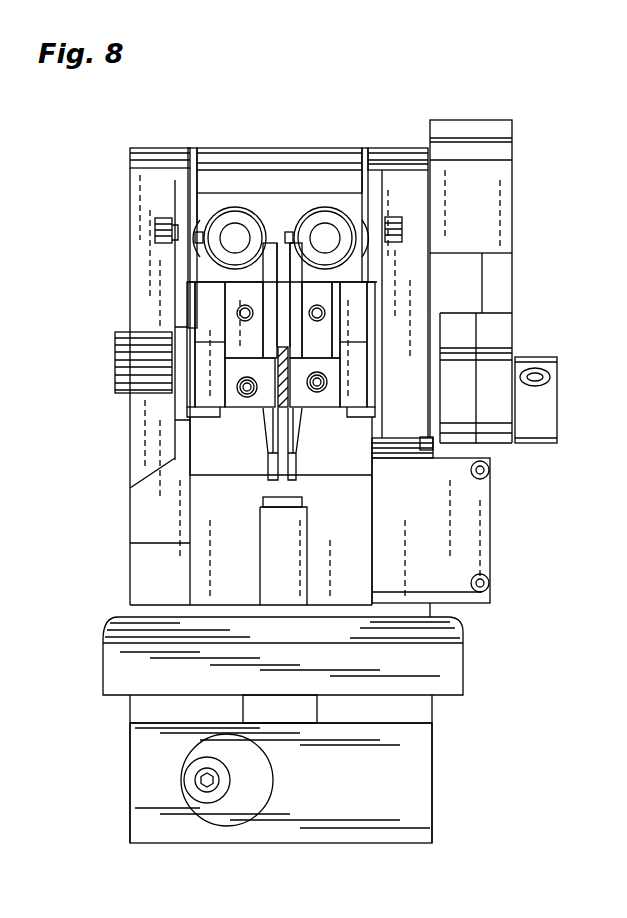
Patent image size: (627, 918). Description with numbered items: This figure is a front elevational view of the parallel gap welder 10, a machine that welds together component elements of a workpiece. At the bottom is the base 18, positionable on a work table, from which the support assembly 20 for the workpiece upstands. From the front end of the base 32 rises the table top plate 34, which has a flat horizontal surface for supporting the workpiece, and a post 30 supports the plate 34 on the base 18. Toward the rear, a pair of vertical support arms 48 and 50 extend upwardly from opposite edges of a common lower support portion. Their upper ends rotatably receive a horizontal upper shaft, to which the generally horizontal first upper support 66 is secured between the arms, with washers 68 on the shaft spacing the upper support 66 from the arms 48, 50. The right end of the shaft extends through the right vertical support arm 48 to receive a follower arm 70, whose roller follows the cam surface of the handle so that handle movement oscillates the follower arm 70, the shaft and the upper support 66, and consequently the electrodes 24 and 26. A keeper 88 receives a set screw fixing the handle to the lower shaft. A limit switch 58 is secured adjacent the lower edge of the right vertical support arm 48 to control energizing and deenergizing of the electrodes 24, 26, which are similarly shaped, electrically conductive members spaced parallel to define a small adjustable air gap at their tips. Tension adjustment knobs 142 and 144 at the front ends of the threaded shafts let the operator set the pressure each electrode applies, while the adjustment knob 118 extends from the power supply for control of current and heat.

The parallel gap welder 10 is at (238, 58).
The base 18 is at (432, 835).
The support assembly 20 is at (500, 676).
The electrode 24 is at (295, 466).
The electrode 26 is at (267, 462).
The post 30 is at (318, 708).
The front end of the base 32 is at (433, 750).
The table top plate 34 is at (463, 648).
The right vertical support arm 48 is at (402, 150).
The left vertical support arm 50 is at (157, 147).
The limit switch 58 is at (490, 528).
The first upper support 66 is at (250, 147).
The washers 68 is at (188, 148).
The follower arm 70 is at (512, 283).
The keeper 88 is at (545, 400).
The adjustment knob 118 is at (115, 364).
The tension adjustment knob 142 is at (345, 263).
The tension adjustment knob 144 is at (210, 257).